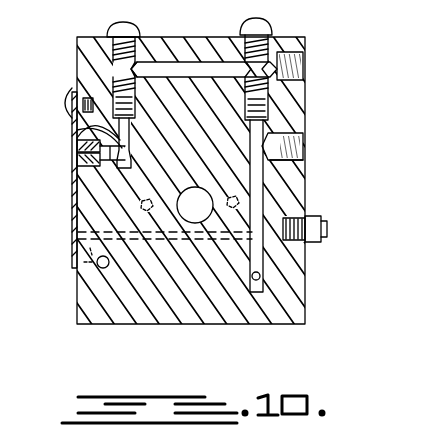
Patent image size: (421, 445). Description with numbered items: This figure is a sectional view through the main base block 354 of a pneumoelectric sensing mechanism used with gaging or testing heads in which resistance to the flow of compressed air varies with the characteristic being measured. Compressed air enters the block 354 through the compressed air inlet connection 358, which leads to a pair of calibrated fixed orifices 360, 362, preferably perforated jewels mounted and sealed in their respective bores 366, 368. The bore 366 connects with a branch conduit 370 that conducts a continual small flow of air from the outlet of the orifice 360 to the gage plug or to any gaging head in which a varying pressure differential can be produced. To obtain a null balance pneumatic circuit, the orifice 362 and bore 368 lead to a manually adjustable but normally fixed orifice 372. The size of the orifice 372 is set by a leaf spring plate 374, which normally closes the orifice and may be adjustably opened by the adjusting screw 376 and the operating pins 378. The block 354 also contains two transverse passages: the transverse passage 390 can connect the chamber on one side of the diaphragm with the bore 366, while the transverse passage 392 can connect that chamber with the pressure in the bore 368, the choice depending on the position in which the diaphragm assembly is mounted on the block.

The main base block 354 is at (300, 302).
The compressed air inlet connection 358 is at (303, 68).
The calibrated fixed orifice 360 is at (270, 110).
The calibrated fixed orifice 362 is at (77, 132).
The bore 366 is at (268, 131).
The bore 368 is at (76, 146).
The branch conduit 370 is at (300, 159).
The manually adjustable orifice 372 is at (78, 165).
The leaf spring plate 374 is at (72, 207).
The adjusting screw 376 is at (319, 223).
The operating pins 378 is at (78, 274).
The transverse passage 390 is at (262, 276).
The transverse passage 392 is at (123, 143).